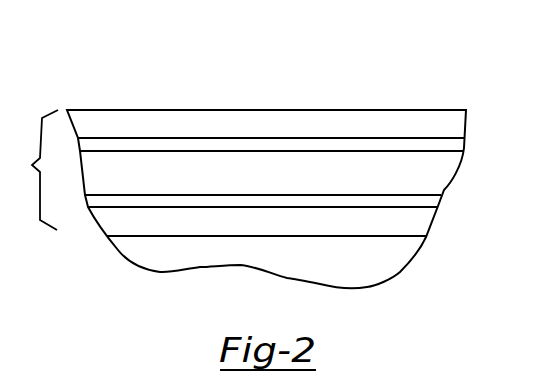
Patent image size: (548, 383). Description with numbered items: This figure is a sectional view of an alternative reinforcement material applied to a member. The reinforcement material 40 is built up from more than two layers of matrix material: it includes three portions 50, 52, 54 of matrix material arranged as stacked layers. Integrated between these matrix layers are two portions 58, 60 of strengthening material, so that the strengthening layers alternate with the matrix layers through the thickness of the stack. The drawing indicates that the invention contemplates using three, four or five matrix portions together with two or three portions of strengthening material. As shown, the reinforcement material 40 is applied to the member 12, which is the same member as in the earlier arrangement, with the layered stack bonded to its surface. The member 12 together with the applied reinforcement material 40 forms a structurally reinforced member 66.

The member 12 is at (391, 258).
The reinforcement material 40 is at (33, 170).
The portion of matrix material 50 is at (114, 125).
The portion of matrix material 52 is at (172, 172).
The portion of matrix material 54 is at (245, 217).
The portion of strengthening material 58 is at (285, 150).
The portion of strengthening material 60 is at (312, 207).
The structurally reinforced member 66 is at (392, 87).